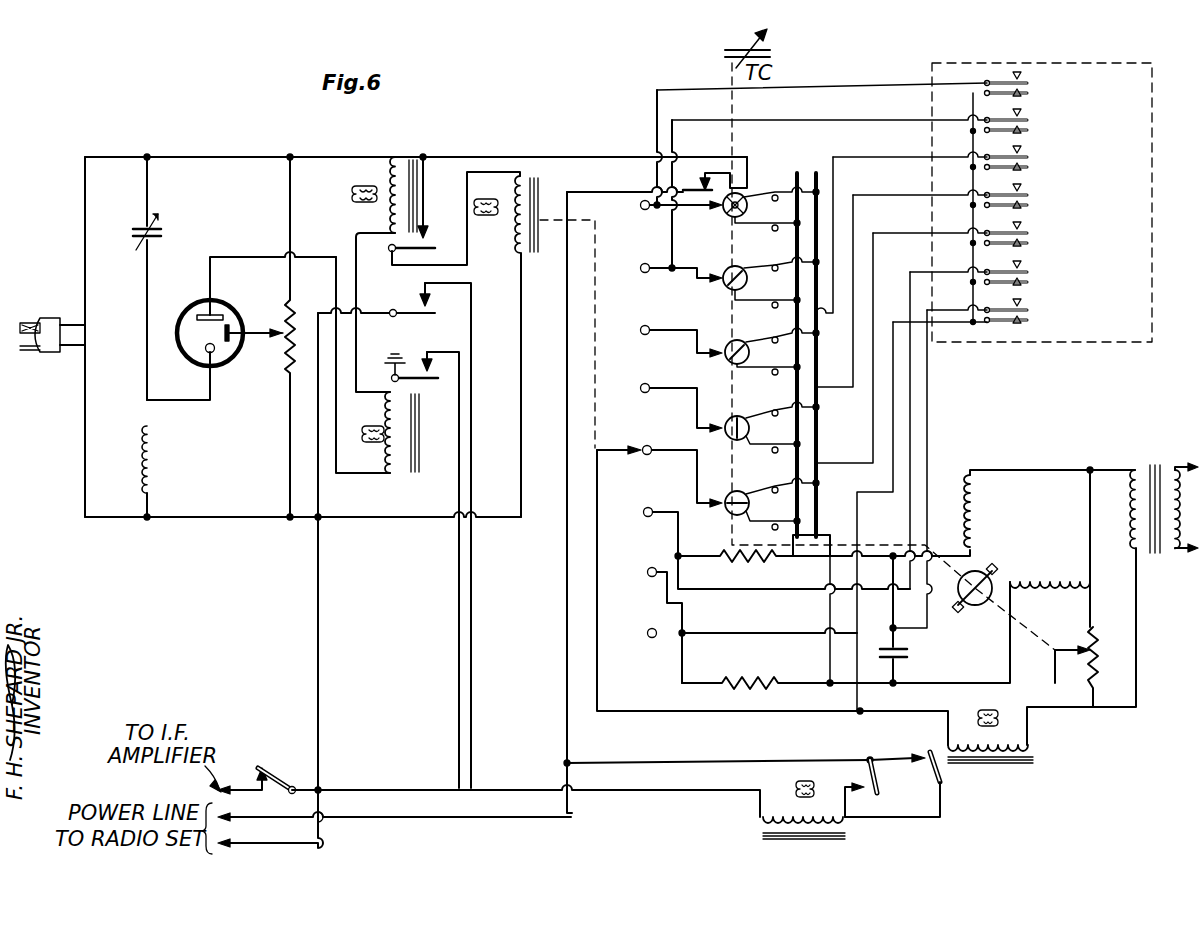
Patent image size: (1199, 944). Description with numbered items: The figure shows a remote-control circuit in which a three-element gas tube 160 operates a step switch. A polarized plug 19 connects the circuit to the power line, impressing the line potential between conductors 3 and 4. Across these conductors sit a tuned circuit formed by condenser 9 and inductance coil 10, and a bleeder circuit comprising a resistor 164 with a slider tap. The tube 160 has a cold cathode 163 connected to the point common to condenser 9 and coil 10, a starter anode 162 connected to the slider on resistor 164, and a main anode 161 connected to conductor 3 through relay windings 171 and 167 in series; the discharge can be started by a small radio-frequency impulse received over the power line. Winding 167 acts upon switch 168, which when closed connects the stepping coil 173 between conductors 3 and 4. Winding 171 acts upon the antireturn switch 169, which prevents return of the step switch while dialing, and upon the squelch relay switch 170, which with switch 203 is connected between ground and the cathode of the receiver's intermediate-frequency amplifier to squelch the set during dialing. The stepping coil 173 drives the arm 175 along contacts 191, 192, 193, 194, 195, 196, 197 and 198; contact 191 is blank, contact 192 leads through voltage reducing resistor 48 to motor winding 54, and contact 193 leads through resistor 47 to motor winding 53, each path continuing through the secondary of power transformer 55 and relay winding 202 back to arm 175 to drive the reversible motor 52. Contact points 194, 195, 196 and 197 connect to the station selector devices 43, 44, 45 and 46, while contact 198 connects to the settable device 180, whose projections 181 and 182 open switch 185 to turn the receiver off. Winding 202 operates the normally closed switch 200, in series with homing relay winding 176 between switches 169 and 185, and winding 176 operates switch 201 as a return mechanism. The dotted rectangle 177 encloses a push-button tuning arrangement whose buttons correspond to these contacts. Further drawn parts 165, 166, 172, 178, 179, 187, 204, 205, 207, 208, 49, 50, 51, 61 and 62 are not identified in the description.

The conductor 3 is at (202, 157).
The conductor 4 is at (215, 521).
The condenser 9 is at (161, 226).
The inductance coil 10 is at (153, 456).
The polarized plug 19 is at (44, 316).
The three element gas tube 160 is at (203, 298).
The main anode 161 is at (194, 304).
The starter anode 162 is at (232, 319).
The cold cathode 163 is at (204, 354).
The bleeder resistor 164 is at (285, 371).
The grid tap 165 is at (264, 354).
The core 166 is at (356, 184).
The relay winding 167 is at (390, 152).
The switch 168 is at (422, 231).
The antireturn switch 169 is at (420, 302).
The squelch relay switch 170 is at (416, 355).
The relay winding 171 is at (395, 476).
The core 172 is at (487, 222).
The stepping coil 173 is at (522, 262).
The arm 175 is at (772, 595).
The homing relay winding 176 is at (846, 830).
The dotted rectangle 177 is at (1030, 61).
The coil 178 is at (370, 414).
The core 179 is at (790, 780).
The settable device 180 is at (759, 217).
The projection 181 is at (745, 206).
The projection 182 is at (720, 206).
The switch 185 is at (715, 169).
The coil 187 is at (530, 152).
The contact 191 is at (648, 631).
The contact 192 is at (647, 572).
The contact 193 is at (756, 543).
The contact point 194 is at (644, 444).
The contact point 195 is at (640, 393).
The contact point 196 is at (640, 331).
The contact point 197 is at (641, 263).
The contact point 198 is at (640, 205).
The relay switch 200 is at (943, 776).
The switch 201 is at (885, 781).
The relay winding 202 is at (1030, 745).
The switch 203 is at (285, 754).
The lead 204 is at (322, 638).
The lead 205 is at (440, 816).
The lead 207 is at (456, 556).
The lead 208 is at (474, 552).
The station selector device 43 is at (728, 512).
The station selector device 44 is at (726, 436).
The station selector device 45 is at (724, 356).
The station selector device 46 is at (722, 284).
The voltage reducing resistor 47 is at (734, 556).
The voltage reducing resistor 48 is at (768, 666).
The lead 49 is at (966, 680).
The terminal block 50 is at (814, 558).
The capacitor 51 is at (907, 652).
The motor 52 is at (972, 610).
The motor winding 53 is at (982, 500).
The motor winding 54 is at (1048, 592).
The power transformer 55 is at (1150, 464).
The bus bar 61 is at (794, 172).
The bus bar 62 is at (816, 172).